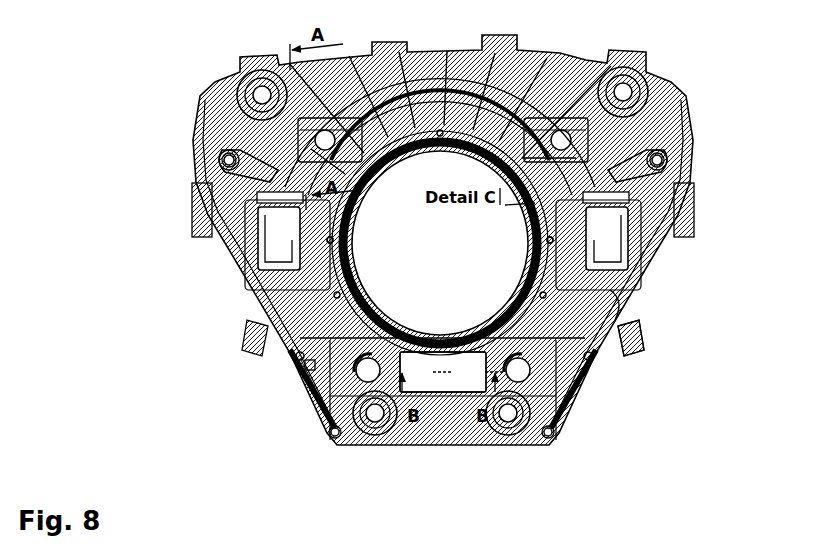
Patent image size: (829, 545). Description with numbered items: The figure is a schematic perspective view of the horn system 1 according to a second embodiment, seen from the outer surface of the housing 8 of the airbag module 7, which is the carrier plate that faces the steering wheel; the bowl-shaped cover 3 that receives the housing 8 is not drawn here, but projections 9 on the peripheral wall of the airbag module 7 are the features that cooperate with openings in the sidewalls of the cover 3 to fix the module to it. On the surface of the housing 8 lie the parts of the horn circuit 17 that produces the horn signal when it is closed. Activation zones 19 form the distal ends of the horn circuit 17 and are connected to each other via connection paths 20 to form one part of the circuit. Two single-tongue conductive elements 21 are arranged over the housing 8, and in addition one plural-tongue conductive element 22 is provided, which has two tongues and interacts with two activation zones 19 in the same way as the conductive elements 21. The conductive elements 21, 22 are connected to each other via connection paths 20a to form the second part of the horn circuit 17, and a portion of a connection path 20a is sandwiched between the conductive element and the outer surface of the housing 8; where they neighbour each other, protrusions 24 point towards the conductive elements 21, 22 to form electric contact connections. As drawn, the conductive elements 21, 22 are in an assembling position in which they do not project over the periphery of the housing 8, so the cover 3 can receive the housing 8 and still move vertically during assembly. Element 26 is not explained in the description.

The horn system 1 is at (148, 278).
The cover 3 is at (658, 306).
The airbag module 7 is at (635, 295).
The housing 8 is at (227, 240).
The projections 9 is at (635, 347).
The horn circuit 17 is at (462, 362).
The activation zones 19 is at (223, 148).
The connection paths 20 is at (592, 400).
The connection paths 20a is at (463, 130).
The conductive elements 21 is at (243, 140).
The plural-tongue conductive element 22 is at (327, 410).
The protrusions 24 is at (455, 392).
The pin 26 is at (573, 140).